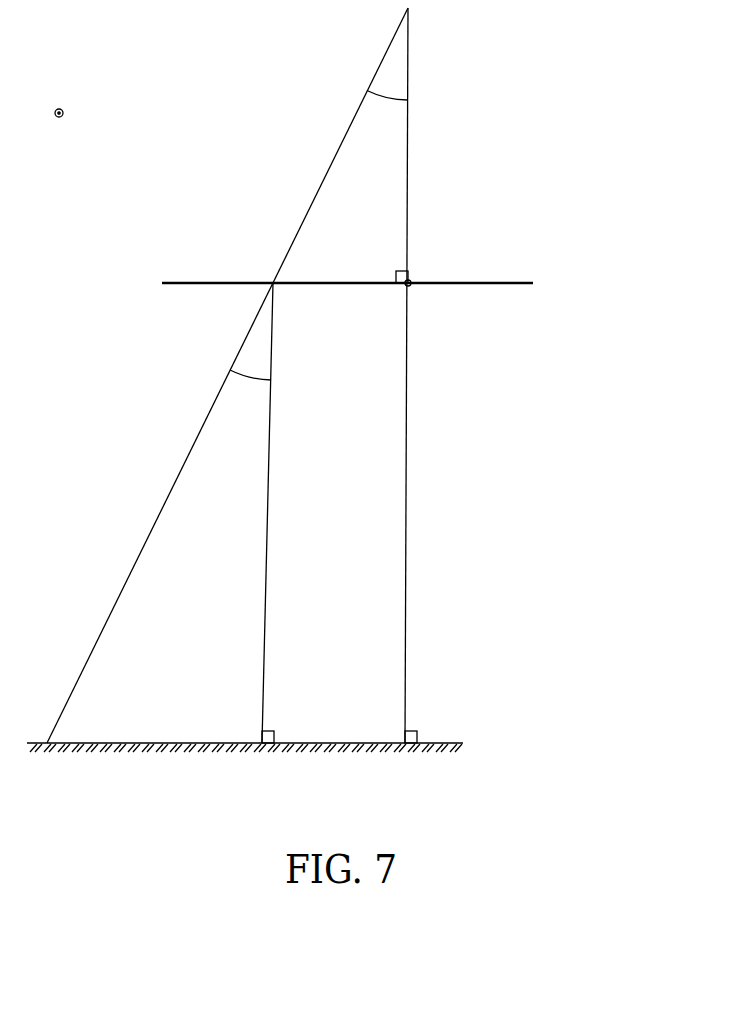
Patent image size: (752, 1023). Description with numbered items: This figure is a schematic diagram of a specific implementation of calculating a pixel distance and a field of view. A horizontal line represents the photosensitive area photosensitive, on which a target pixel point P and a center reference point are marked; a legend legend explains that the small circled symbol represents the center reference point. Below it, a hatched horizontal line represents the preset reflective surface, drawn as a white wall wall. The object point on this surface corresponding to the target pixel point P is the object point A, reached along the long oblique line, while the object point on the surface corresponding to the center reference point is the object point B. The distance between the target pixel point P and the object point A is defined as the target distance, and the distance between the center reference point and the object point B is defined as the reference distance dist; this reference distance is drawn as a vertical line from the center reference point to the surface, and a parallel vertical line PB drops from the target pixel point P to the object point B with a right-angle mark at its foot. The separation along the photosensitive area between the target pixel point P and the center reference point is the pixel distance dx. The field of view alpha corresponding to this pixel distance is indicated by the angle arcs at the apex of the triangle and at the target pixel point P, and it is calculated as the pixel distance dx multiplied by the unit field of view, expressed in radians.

The target pixel point P is at (242, 263).
The object point corresponding to target pixel point A is at (44, 771).
The object point corresponding to center reference point B is at (260, 771).
The pixel distance dx is at (341, 273).
The field of view alpha is at (319, 252).
The reference distance dist is at (422, 375).
The perpendicular from P to white wall PB is at (277, 513).
The photosensitive area photosensitive is at (478, 258).
The preset reflective surface wall is at (245, 772).
The legend: center reference point symbol legend is at (161, 124).